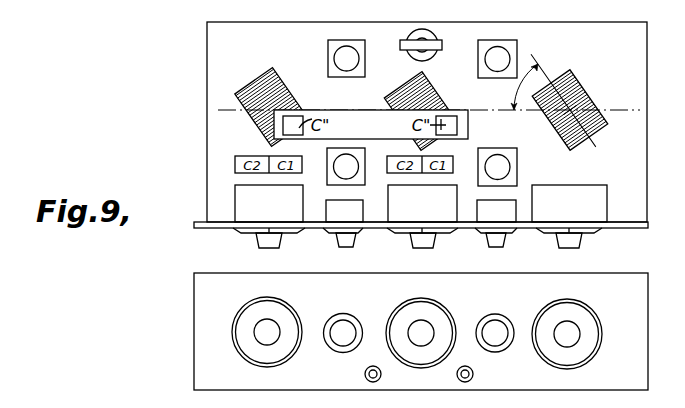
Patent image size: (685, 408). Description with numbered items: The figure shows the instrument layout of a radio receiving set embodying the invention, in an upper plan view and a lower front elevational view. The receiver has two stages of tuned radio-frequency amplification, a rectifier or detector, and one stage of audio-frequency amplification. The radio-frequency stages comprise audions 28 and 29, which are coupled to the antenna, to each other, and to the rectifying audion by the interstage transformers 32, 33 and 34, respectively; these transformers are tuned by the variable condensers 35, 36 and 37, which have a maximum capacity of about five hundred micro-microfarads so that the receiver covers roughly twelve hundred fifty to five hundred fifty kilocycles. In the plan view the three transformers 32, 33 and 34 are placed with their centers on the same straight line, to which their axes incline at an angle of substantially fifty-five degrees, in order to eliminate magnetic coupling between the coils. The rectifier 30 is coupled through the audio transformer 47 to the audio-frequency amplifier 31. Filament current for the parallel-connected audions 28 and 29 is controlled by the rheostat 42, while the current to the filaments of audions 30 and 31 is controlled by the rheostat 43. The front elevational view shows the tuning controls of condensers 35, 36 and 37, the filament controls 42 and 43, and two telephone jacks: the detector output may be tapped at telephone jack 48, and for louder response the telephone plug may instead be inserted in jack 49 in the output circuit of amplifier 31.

The audion 28 is at (346, 166).
The audion 29 is at (497, 167).
The rectifier 30 is at (497, 59).
The audio-frequency amplifier 31 is at (346, 58).
The interstage transformer 32 is at (249, 84).
The interstage transformer 33 is at (406, 83).
The interstage transformer 34 is at (572, 69).
The variable condenser 35 is at (284, 301).
The variable condenser 36 is at (436, 301).
The variable condenser 37 is at (582, 302).
The rheostat 42 is at (351, 315).
The rheostat 43 is at (503, 316).
The audio transformer 47 is at (434, 54).
The telephone jack 48 is at (365, 376).
The telephone jack 49 is at (473, 375).